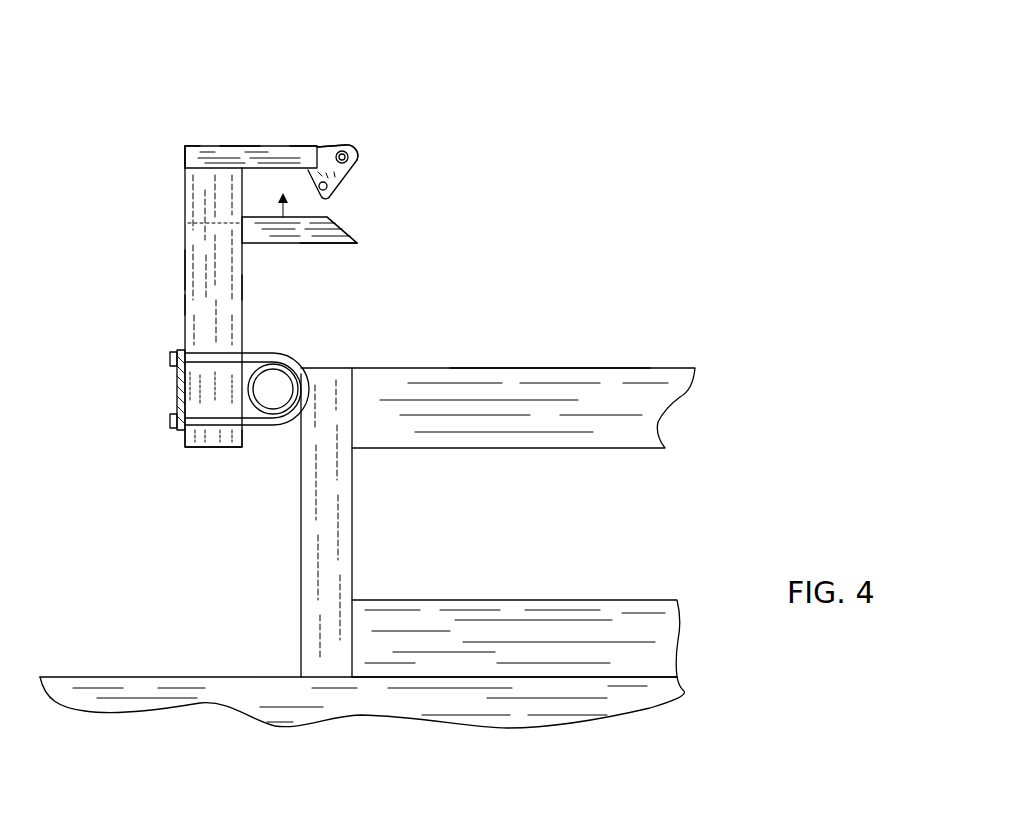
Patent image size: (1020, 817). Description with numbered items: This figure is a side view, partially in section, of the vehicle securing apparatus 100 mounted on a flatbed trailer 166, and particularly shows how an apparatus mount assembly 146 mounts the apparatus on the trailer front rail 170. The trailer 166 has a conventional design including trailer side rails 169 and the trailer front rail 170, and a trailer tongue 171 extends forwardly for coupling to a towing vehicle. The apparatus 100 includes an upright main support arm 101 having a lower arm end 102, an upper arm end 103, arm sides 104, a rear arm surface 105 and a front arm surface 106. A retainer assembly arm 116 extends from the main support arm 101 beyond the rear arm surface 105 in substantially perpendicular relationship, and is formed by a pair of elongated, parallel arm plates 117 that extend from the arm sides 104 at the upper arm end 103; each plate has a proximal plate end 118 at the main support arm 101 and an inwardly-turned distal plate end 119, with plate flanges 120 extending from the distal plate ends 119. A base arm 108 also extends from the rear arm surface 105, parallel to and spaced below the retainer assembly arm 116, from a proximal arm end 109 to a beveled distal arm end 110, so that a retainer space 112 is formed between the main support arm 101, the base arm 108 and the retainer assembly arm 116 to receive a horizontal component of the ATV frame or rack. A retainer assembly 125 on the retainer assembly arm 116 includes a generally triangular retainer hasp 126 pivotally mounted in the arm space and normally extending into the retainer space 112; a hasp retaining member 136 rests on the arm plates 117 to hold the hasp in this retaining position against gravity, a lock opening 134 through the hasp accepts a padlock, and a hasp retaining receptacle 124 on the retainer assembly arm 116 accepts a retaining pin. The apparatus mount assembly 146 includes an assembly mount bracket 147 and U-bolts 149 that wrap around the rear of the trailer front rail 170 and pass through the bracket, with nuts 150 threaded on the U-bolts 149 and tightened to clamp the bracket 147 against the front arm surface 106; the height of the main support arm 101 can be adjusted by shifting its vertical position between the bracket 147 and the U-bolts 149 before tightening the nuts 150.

The vehicle securing apparatus 100 is at (162, 80).
The main support arm 101 is at (182, 264).
The lower arm end 102 is at (225, 452).
The upper arm end 103 is at (201, 144).
The arm sides 104 is at (205, 190).
The rear arm surface 105 is at (243, 287).
The front arm surface 106 is at (183, 305).
The base arm 108 is at (355, 246).
The proximal arm end 109 is at (238, 225).
The distal arm end 110 is at (345, 228).
The retainer space 112 is at (275, 244).
The retainer assembly arm 116 is at (177, 138).
The arm plates 117 is at (240, 145).
The proximal plate ends 118 is at (182, 148).
The distal plate ends 119 is at (333, 143).
The plate flanges 120 is at (347, 182).
The hasp retaining receptacle 124 is at (300, 144).
The retainer assembly 125 is at (378, 140).
The retainer hasp 126 is at (358, 168).
The lock opening 134 is at (328, 197).
The hasp retaining member 136 is at (316, 144).
The apparatus mount assembly 146 is at (160, 370).
The assembly mount bracket 147 is at (175, 436).
The U-bolts 149 is at (304, 368).
The nuts 150 is at (170, 420).
The flatbed trailer 166 is at (638, 367).
The trailer side rails 169 is at (565, 380).
The trailer front rail 170 is at (302, 374).
The trailer tongue 171 is at (212, 677).